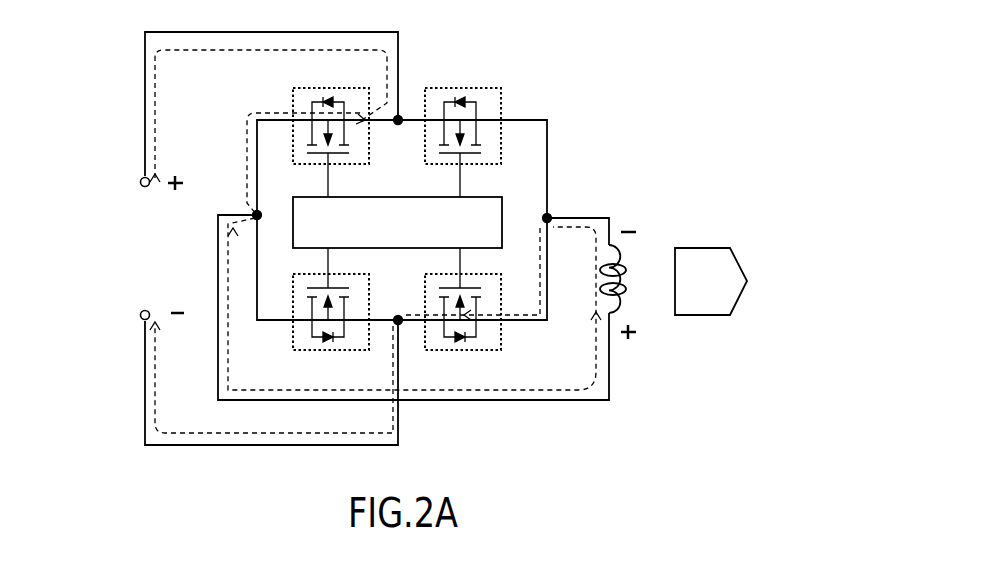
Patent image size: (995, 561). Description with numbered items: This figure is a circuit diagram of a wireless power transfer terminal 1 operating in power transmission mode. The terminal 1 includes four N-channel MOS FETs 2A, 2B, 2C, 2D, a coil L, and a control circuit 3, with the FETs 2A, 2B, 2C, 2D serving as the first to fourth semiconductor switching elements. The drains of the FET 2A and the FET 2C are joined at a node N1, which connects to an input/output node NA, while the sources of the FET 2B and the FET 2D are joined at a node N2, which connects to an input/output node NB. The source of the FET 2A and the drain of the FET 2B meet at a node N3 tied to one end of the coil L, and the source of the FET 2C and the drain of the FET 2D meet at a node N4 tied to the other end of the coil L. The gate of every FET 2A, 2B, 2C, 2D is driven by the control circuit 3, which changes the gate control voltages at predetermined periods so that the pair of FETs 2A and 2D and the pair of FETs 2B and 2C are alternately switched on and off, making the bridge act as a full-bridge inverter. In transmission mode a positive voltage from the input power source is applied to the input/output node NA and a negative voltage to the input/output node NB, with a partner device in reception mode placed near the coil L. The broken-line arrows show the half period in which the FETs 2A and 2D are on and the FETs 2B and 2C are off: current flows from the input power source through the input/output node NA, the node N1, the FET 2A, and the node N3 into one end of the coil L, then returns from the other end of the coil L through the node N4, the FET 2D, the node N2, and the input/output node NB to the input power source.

The wireless power transfer terminal 1 is at (606, 100).
The FET 2A is at (293, 88).
The FET 2B is at (293, 350).
The FET 2C is at (498, 88).
The FET 2D is at (498, 350).
The control circuit 3 is at (494, 206).
The node N1 is at (398, 134).
The node N2 is at (398, 310).
The node N3 is at (247, 232).
The node N4 is at (534, 222).
The coil L is at (603, 279).
The input/output node NA is at (135, 191).
The input/output node NB is at (130, 314).